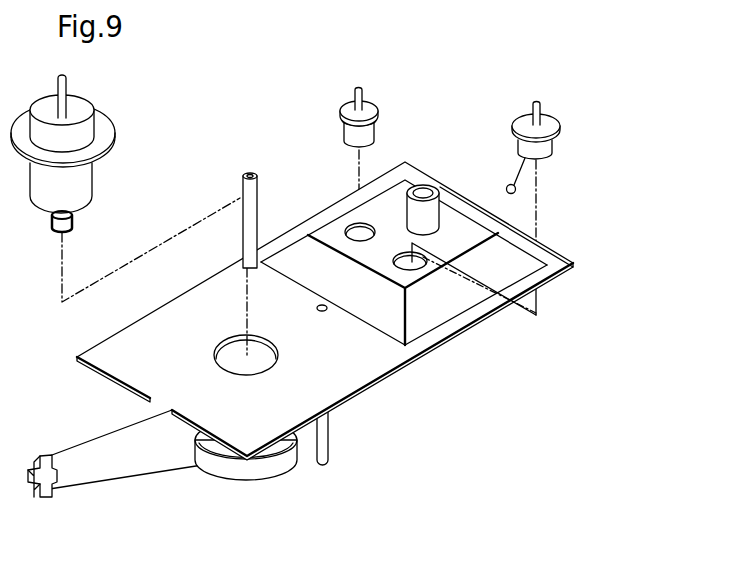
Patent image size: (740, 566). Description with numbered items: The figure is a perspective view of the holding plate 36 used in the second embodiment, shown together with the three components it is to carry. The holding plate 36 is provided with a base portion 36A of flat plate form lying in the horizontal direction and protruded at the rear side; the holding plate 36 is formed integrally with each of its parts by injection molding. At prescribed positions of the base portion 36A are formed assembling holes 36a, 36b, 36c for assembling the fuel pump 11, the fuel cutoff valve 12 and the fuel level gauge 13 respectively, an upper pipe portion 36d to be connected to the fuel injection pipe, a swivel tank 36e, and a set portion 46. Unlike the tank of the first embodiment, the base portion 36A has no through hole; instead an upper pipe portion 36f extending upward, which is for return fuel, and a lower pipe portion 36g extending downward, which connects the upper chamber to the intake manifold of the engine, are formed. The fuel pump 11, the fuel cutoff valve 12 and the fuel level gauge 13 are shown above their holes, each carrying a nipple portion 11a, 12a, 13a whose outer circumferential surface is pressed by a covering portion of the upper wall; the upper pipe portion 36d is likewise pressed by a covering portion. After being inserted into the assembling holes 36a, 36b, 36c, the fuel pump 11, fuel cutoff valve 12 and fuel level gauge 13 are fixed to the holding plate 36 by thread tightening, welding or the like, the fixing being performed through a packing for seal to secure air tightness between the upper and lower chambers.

The fuel pump 11 is at (83, 191).
The nipple portion 11a is at (62, 86).
The fuel cutoff valve 12 is at (368, 137).
The nipple portion 12a is at (358, 97).
The fuel level gauge 13 is at (549, 148).
The nipple portion 13a is at (540, 112).
The holding plate 36 is at (300, 322).
The base portion 36A is at (368, 378).
The assembling hole 36a is at (223, 343).
The assembling hole 36b is at (352, 228).
The assembling hole 36c is at (421, 256).
The upper pipe portion 36d is at (435, 192).
The swivel tank 36e is at (273, 465).
The upper pipe portion 36f is at (250, 188).
The lower pipe portion 36g is at (327, 446).
The set portion 46 is at (97, 443).